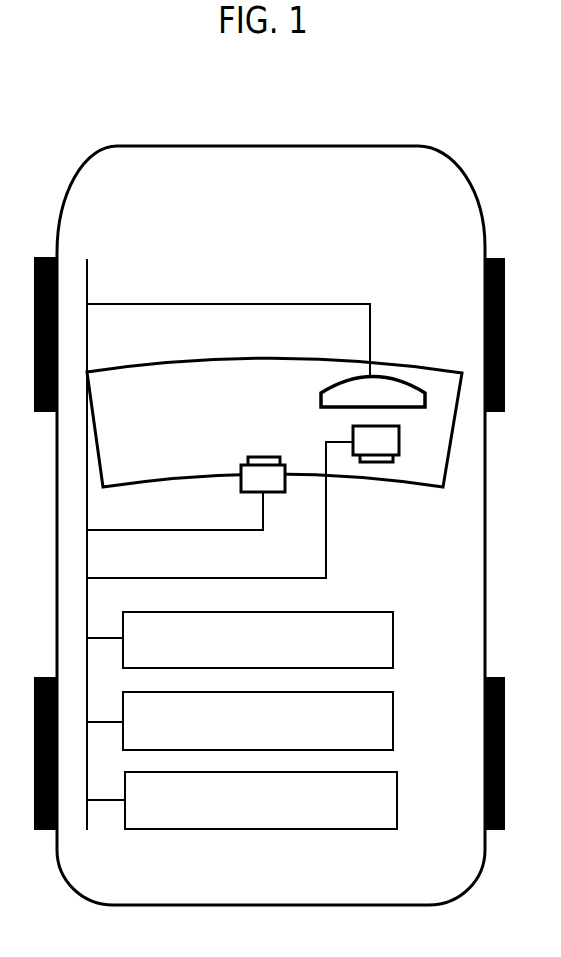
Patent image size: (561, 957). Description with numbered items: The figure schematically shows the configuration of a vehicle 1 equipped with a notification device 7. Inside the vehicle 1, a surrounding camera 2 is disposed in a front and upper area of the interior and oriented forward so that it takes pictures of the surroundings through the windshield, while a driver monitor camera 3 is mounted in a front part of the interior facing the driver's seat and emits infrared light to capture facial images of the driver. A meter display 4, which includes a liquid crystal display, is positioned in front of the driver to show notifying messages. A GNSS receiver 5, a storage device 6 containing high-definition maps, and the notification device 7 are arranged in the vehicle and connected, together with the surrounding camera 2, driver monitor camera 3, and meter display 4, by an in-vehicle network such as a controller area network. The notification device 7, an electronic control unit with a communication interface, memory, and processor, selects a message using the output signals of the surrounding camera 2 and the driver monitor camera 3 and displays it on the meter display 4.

The vehicle 1 is at (393, 141).
The surrounding camera 2 is at (241, 480).
The driver monitor camera 3 is at (399, 448).
The meter display 4 is at (350, 376).
The GNSS receiver 5 is at (394, 643).
The storage device 6 is at (394, 735).
The notification device 7 is at (398, 812).